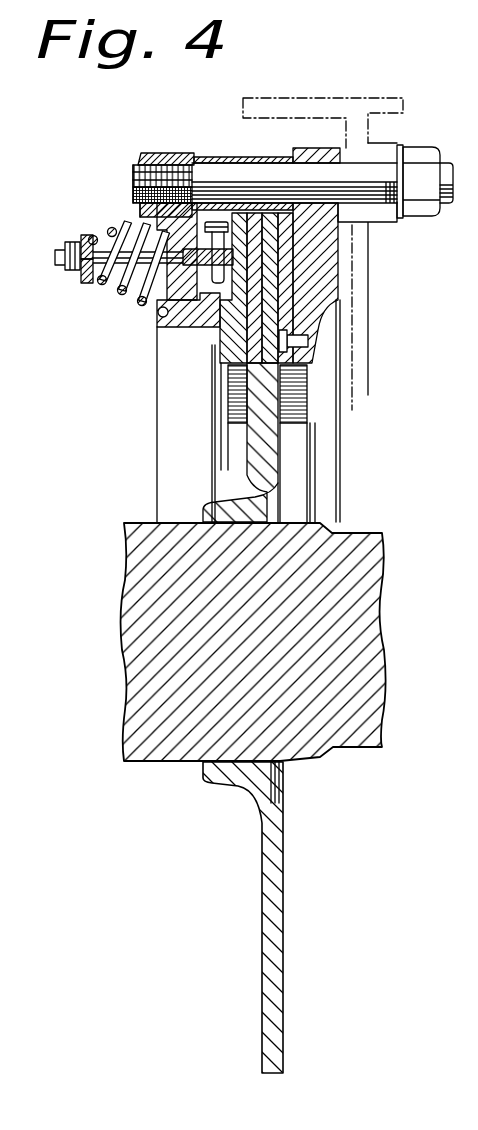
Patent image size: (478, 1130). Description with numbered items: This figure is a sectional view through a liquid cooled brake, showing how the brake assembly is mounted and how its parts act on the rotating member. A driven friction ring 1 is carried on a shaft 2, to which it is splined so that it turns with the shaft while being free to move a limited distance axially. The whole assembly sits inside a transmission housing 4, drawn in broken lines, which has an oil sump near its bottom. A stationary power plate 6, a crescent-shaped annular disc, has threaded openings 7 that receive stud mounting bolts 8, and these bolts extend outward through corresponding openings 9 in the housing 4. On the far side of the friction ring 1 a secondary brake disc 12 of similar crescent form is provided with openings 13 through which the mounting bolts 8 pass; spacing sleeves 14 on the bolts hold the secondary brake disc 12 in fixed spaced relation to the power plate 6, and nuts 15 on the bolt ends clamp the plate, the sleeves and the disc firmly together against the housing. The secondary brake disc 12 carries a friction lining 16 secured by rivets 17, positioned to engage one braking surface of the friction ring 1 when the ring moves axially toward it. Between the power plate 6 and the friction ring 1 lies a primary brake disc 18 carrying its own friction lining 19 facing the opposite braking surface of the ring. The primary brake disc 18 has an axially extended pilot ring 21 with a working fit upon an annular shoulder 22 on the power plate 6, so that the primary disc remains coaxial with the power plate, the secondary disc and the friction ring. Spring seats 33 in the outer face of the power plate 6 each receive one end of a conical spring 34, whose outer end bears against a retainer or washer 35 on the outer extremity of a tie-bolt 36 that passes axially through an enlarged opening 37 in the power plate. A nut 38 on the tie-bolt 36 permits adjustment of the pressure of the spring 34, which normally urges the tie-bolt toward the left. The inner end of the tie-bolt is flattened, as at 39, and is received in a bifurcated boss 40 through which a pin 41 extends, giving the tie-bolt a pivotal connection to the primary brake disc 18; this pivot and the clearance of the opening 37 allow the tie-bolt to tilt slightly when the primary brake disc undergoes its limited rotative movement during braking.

The driven friction ring 1 is at (276, 927).
The shaft 2 is at (124, 643).
The transmission housing 4 is at (372, 284).
The stationary power plate 6 is at (180, 330).
The openings 7 is at (162, 153).
The stud mounting bolts 8 is at (251, 163).
The openings 9 is at (370, 163).
The secondary brake disc 12 is at (333, 256).
The openings 13 is at (316, 142).
The spacing sleeves 14 is at (274, 158).
The nuts 15 is at (440, 150).
The friction lining 16 is at (289, 306).
The rivets 17 is at (300, 340).
The primary brake disc 18 is at (222, 362).
The friction lining 19 is at (250, 370).
The pilot ring 21 is at (200, 300).
The annular shoulder 22 is at (228, 338).
The spring seats 33 is at (186, 209).
The conical spring 34 is at (128, 292).
The retainer or washer 35 is at (86, 246).
The tie-bolt 36 is at (85, 285).
The opening 37 is at (175, 270).
The nut 38 is at (55, 272).
The flattened end 39 is at (150, 180).
The bifurcated boss 40 is at (214, 210).
The pin 41 is at (225, 222).